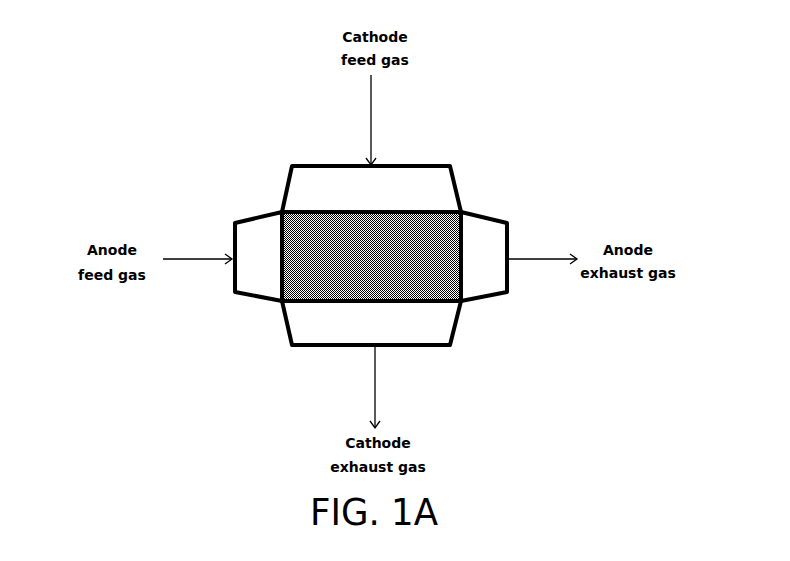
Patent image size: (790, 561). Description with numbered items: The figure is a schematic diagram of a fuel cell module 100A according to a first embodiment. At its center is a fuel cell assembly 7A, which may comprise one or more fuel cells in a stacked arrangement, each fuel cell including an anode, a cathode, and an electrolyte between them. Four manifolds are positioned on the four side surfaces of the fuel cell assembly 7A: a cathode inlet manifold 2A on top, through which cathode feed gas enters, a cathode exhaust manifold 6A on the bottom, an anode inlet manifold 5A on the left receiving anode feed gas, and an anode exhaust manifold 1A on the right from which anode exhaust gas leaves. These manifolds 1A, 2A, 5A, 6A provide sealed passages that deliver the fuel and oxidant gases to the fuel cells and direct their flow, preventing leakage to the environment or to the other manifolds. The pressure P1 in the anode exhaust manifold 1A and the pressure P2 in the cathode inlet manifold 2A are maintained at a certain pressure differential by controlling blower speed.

The fuel cell module 100A is at (150, 87).
The anode exhaust manifold 1A is at (487, 212).
The cathode inlet manifold 2A is at (282, 188).
The anode inlet manifold 5A is at (232, 252).
The cathode exhaust manifold 6A is at (370, 350).
The fuel cell assembly 7A is at (371, 256).
The pressure in the anode exhaust manifold P1 is at (477, 265).
The pressure in the cathode inlet manifold P2 is at (392, 197).